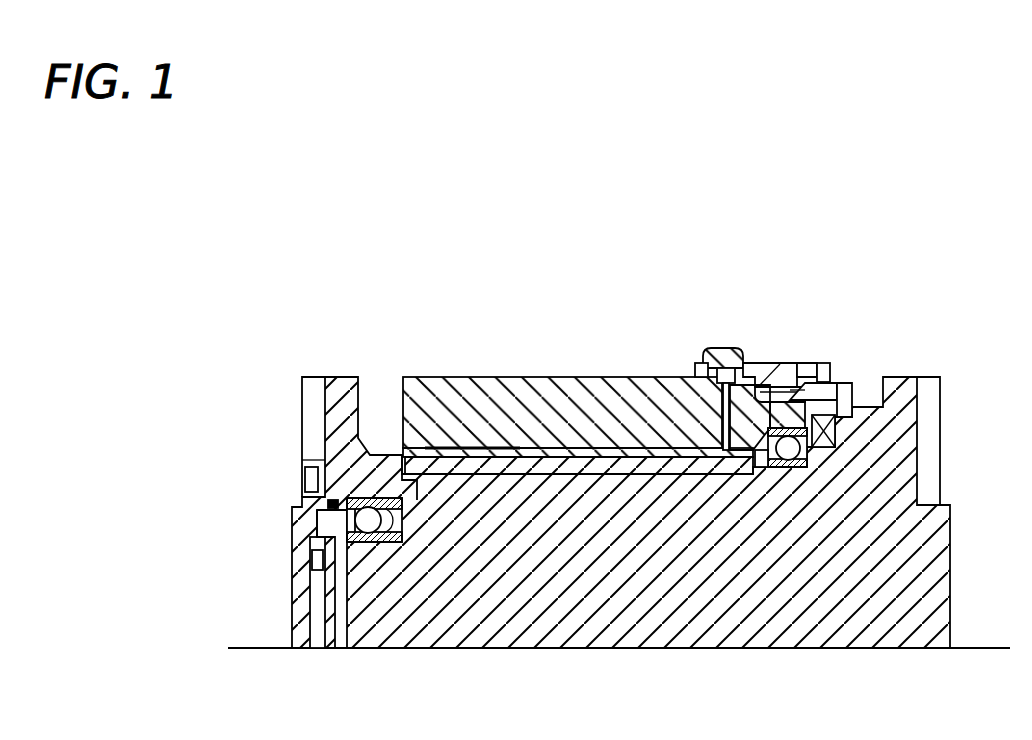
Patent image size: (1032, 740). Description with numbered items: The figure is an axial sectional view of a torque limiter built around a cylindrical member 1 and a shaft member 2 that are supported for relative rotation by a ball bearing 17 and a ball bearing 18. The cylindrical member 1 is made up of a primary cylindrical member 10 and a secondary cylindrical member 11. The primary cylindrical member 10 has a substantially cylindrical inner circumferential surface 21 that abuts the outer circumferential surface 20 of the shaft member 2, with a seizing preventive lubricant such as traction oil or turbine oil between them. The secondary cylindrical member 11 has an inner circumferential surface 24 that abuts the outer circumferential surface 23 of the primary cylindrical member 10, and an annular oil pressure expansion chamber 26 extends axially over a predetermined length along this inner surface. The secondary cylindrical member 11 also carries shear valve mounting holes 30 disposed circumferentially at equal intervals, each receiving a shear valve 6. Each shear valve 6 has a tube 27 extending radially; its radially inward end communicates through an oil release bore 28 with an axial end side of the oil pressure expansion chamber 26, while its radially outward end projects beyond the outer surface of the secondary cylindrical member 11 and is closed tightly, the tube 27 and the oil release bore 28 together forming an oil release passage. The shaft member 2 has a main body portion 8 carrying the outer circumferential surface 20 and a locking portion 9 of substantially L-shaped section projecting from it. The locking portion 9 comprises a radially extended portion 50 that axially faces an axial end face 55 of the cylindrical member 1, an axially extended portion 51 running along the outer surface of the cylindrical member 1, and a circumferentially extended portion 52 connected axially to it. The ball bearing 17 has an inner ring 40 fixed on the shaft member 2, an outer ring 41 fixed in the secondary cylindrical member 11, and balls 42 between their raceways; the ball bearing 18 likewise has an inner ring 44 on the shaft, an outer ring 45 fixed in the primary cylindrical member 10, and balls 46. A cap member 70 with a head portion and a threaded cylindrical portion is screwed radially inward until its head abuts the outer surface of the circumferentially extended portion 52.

The cylindrical member 1 is at (557, 393).
The shaft member 2 is at (612, 600).
The shear valve 6 is at (722, 368).
The main body portion 8 is at (453, 612).
The locking portion 9 is at (815, 385).
The primary cylindrical member 10 is at (565, 467).
The secondary cylindrical member 11 is at (624, 378).
The ball bearing 17 is at (783, 470).
The ball bearing 18 is at (374, 489).
The outer circumferential surface 20 is at (470, 454).
The inner circumferential surface 21 is at (695, 447).
The outer circumferential surface 23 is at (728, 456).
The inner circumferential surface 24 is at (500, 460).
The oil pressure expansion chamber 26 is at (523, 447).
The tube 27 is at (690, 427).
The oil release bore 28 is at (658, 377).
The shear valve mounting hole 30 is at (753, 363).
The inner ring 40 is at (798, 470).
The outer ring 41 is at (782, 395).
The balls 42 is at (838, 443).
The inner ring 44 is at (365, 548).
The outer ring 45 is at (398, 513).
The balls 46 is at (330, 510).
The radially extended portion 50 is at (848, 417).
The axially extended portion 51 is at (797, 384).
The circumferentially extended portion 52 is at (703, 376).
The axial end face 55 is at (840, 410).
The cap member 70 is at (727, 348).